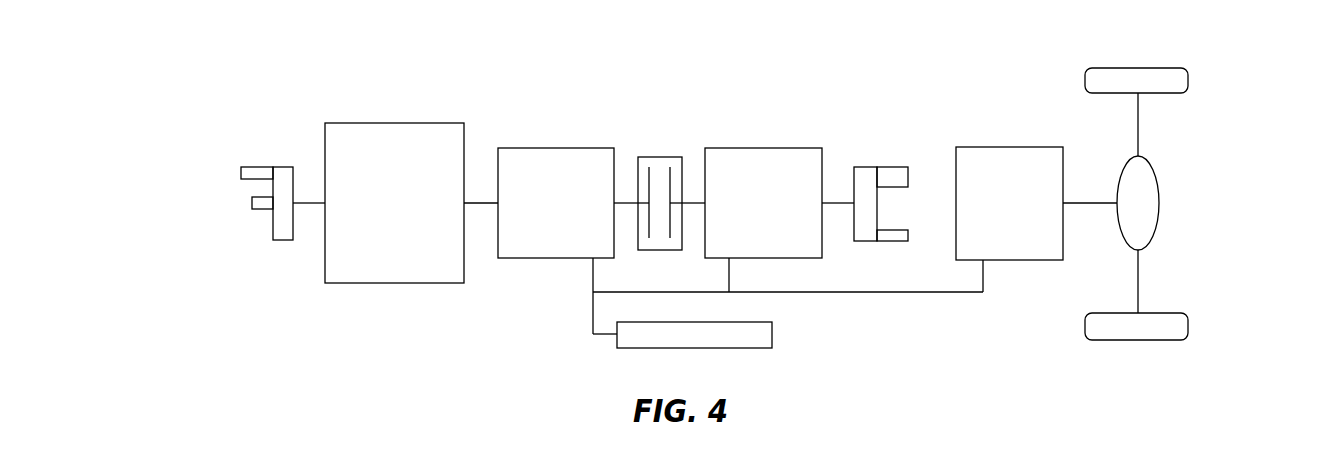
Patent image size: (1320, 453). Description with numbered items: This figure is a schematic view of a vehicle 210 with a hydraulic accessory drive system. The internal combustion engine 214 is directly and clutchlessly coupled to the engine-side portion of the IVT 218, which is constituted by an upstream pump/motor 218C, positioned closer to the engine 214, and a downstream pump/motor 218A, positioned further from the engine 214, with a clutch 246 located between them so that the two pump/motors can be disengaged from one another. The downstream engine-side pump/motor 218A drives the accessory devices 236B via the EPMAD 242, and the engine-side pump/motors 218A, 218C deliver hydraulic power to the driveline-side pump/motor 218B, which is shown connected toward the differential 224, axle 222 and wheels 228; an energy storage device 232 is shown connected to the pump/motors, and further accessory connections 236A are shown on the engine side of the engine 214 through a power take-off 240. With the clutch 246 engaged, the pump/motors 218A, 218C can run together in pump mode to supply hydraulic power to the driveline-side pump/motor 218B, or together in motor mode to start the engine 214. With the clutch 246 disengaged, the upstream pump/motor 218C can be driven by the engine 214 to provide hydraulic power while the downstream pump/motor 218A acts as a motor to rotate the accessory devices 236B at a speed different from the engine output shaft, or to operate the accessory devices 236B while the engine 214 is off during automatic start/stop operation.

The vehicle 210 is at (296, 72).
The internal combustion engine 214 is at (363, 272).
The IVT 218 is at (524, 125).
The downstream engine-side pump/motor 218A is at (745, 153).
The driveline-side pump/motor 218B is at (1010, 147).
The upstream engine-side pump/motor 218C is at (573, 155).
The axle 222 is at (1138, 122).
The differential 224 is at (1148, 190).
The wheels 228 is at (1183, 74).
The energy storage device 232 is at (770, 333).
The power take-off connections 236A is at (242, 171).
The accessory devices 236B is at (918, 232).
The power take-off 240 is at (280, 256).
The EPMAD 242 is at (856, 152).
The clutch 246 is at (663, 160).